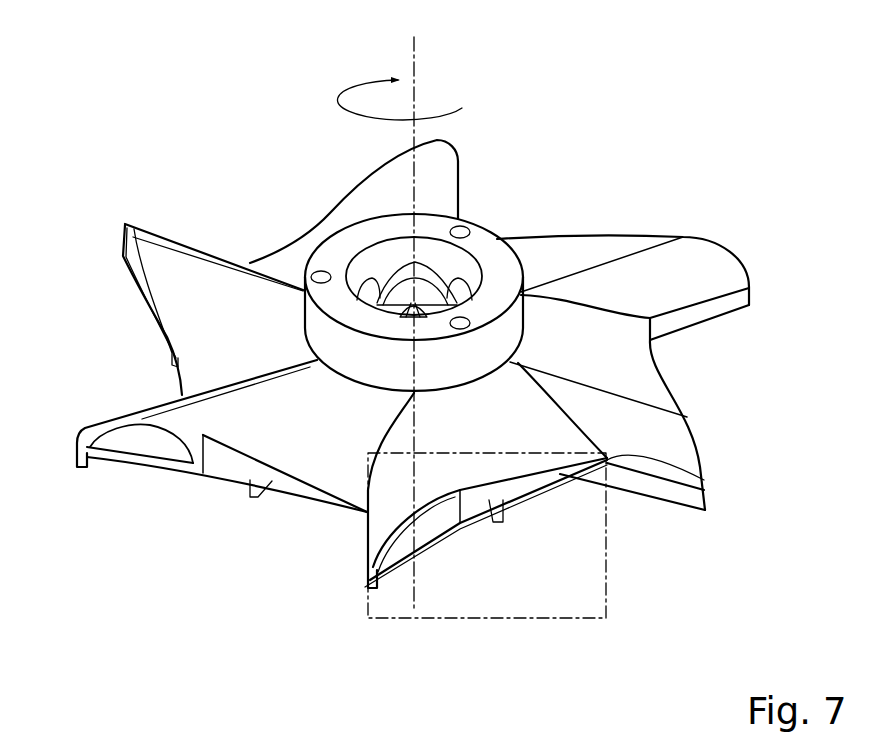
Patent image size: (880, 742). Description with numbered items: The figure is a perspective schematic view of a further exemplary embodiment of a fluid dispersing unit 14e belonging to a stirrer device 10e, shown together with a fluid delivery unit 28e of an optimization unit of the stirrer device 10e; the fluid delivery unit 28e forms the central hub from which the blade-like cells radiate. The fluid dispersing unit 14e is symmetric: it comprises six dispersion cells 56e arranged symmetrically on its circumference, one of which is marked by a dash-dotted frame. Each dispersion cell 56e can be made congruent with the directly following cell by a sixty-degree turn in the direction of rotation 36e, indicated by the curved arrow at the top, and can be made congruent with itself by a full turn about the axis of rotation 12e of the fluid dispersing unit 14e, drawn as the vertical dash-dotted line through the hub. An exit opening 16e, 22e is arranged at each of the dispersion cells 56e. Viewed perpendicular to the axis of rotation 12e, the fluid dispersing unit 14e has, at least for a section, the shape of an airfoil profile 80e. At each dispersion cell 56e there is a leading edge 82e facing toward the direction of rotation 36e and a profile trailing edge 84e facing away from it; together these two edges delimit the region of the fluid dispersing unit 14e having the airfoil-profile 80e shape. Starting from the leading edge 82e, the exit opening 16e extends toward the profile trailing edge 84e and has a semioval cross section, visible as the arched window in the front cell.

The stirrer device 10e is at (414, 342).
The axis of rotation 12e is at (416, 75).
The fluid dispersing unit 14e is at (177, 186).
The exit opening 16e is at (448, 428).
The exit opening 22e is at (148, 447).
The fluid delivery unit 28e is at (452, 275).
The direction of rotation 36e is at (352, 86).
The dispersion cell 56e is at (614, 580).
The airfoil profile 80e is at (478, 473).
The leading edge 82e is at (368, 571).
The profile trailing edge 84e is at (704, 480).